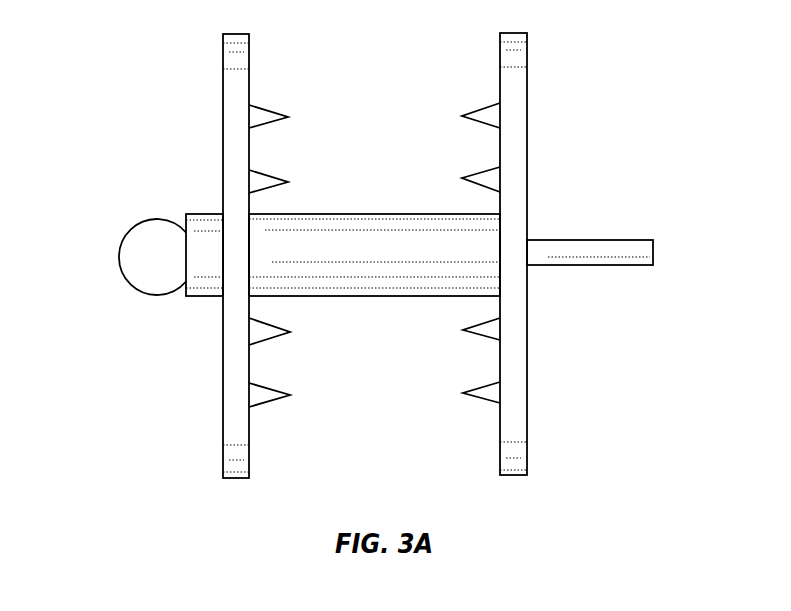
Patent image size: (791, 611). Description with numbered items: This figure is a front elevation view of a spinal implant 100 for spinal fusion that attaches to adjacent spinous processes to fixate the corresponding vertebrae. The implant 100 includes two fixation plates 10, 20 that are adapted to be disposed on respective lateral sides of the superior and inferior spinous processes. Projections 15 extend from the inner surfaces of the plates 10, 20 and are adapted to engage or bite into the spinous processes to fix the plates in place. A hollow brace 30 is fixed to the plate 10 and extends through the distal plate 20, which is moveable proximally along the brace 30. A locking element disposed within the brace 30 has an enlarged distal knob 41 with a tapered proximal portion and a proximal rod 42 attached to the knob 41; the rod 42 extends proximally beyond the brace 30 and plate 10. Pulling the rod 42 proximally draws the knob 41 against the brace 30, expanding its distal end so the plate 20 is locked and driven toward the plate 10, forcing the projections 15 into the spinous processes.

The spinal implant 100 is at (130, 78).
The fixation plate 10 is at (510, 102).
The fixation plate 20 is at (242, 418).
The projections 15 is at (262, 116).
The brace 30 is at (363, 275).
The enlarged distal knob 41 is at (152, 275).
The proximal rod 42 is at (610, 253).